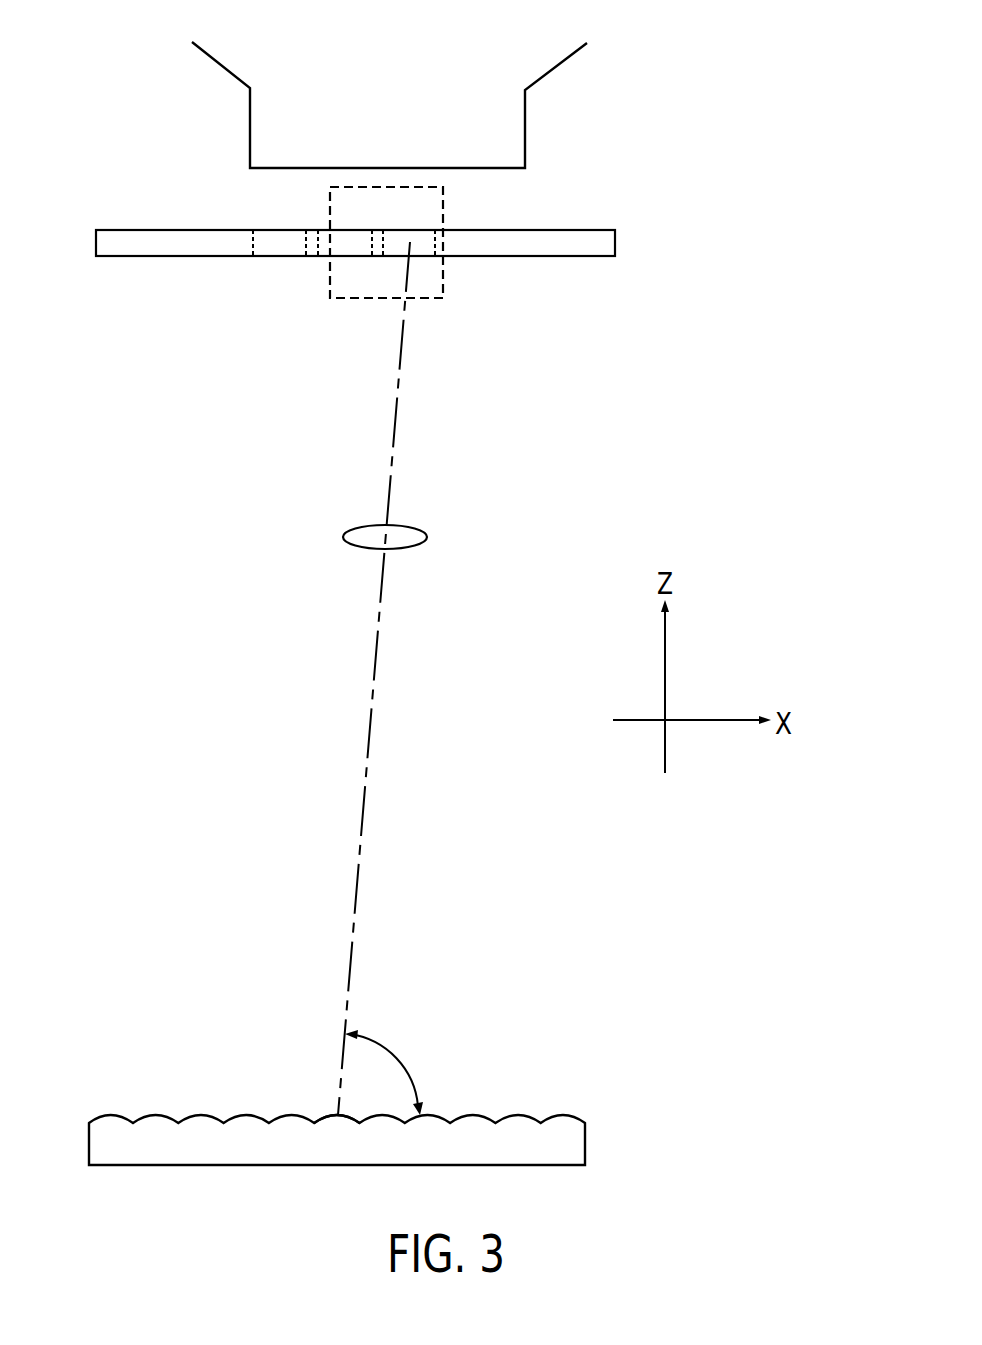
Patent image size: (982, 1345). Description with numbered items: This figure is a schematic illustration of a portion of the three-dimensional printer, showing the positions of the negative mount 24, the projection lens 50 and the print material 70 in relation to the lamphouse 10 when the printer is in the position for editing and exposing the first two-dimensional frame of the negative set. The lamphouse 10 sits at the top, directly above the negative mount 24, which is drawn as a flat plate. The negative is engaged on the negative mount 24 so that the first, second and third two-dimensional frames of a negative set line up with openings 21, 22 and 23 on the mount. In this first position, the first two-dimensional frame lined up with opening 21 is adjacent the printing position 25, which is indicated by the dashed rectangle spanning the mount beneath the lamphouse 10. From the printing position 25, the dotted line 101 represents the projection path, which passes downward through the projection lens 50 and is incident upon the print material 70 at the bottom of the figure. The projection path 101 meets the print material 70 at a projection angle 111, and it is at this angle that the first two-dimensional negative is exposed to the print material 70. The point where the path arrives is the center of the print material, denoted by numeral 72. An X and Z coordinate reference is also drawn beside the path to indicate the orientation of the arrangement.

The lamphouse 10 is at (510, 113).
The opening 21 is at (420, 250).
The opening 22 is at (328, 256).
The opening 23 is at (272, 248).
The negative mount 24 is at (603, 235).
The printing position 25 is at (443, 213).
The projection lens 50 is at (417, 533).
The print material 70 is at (563, 1147).
The center of print material 72 is at (328, 1110).
The projection path 101 is at (402, 353).
The projection angle 111 is at (390, 1048).